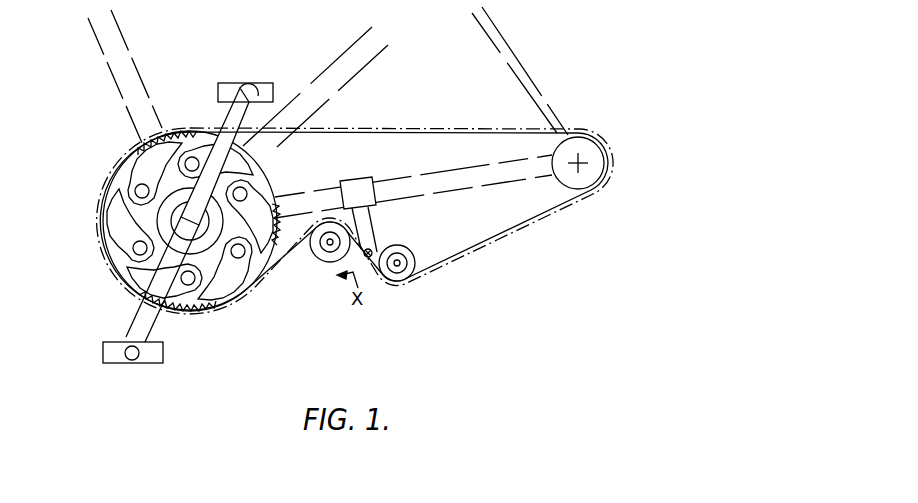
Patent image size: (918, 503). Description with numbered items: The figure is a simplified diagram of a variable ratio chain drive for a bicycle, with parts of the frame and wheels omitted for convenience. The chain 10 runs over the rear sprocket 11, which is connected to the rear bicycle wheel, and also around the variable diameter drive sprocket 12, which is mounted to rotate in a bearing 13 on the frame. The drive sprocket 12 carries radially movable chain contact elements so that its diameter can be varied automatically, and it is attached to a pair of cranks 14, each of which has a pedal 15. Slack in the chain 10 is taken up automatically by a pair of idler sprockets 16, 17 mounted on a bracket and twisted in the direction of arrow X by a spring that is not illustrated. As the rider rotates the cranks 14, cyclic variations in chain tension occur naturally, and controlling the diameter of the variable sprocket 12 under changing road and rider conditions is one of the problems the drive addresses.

The chain 10 is at (447, 126).
The rear sprocket 11 is at (595, 175).
The variable diameter drive sprocket 12 is at (240, 284).
The bearing 13 is at (207, 188).
The cranks 14 is at (243, 117).
The pedal 15 is at (258, 88).
The idler sprocket 16 is at (327, 263).
The idler sprocket 17 is at (396, 282).